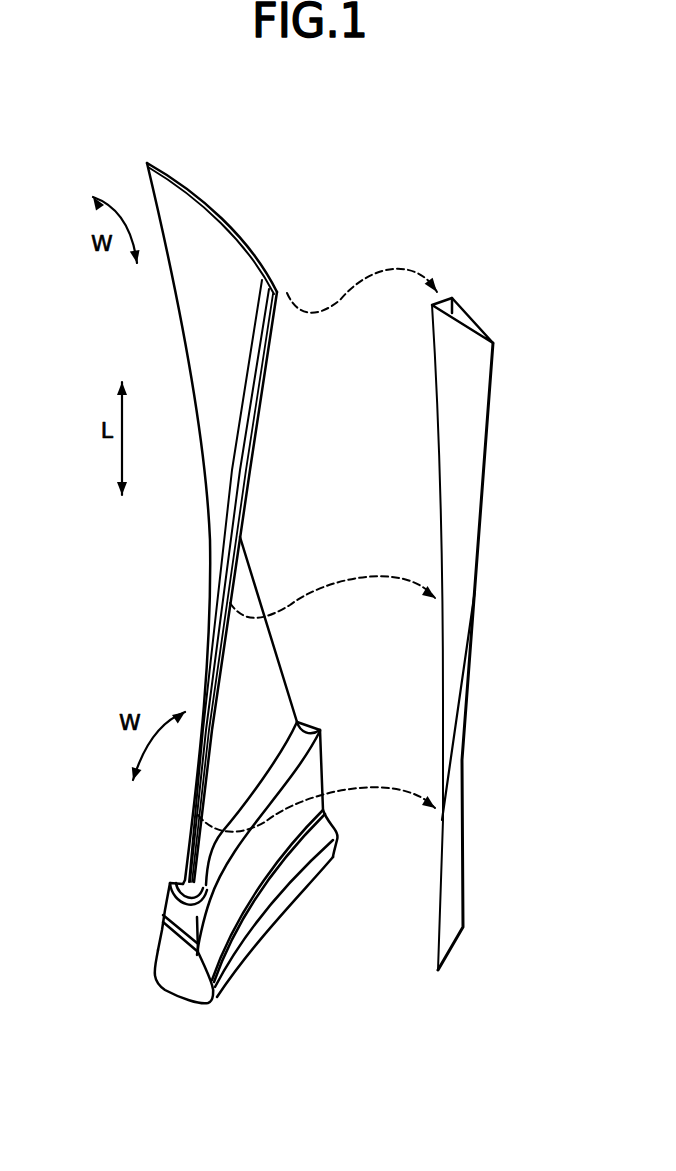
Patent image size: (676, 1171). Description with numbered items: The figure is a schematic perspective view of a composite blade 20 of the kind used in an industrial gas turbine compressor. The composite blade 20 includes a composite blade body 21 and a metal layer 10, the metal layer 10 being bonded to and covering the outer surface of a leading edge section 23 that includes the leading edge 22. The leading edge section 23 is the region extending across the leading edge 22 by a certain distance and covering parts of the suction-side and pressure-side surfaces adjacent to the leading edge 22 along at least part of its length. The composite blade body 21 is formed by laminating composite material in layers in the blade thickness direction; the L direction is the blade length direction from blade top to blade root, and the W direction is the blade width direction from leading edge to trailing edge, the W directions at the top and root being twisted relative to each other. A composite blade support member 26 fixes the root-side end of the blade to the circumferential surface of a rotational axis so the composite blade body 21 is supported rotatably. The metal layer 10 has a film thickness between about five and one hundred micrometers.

The metal layer 10 is at (463, 290).
The composite blade 20 is at (257, 182).
The composite blade body 21 is at (242, 243).
The leading edge 22 is at (258, 417).
The leading edge section 23 is at (258, 352).
The composite blade support member 26 is at (177, 933).